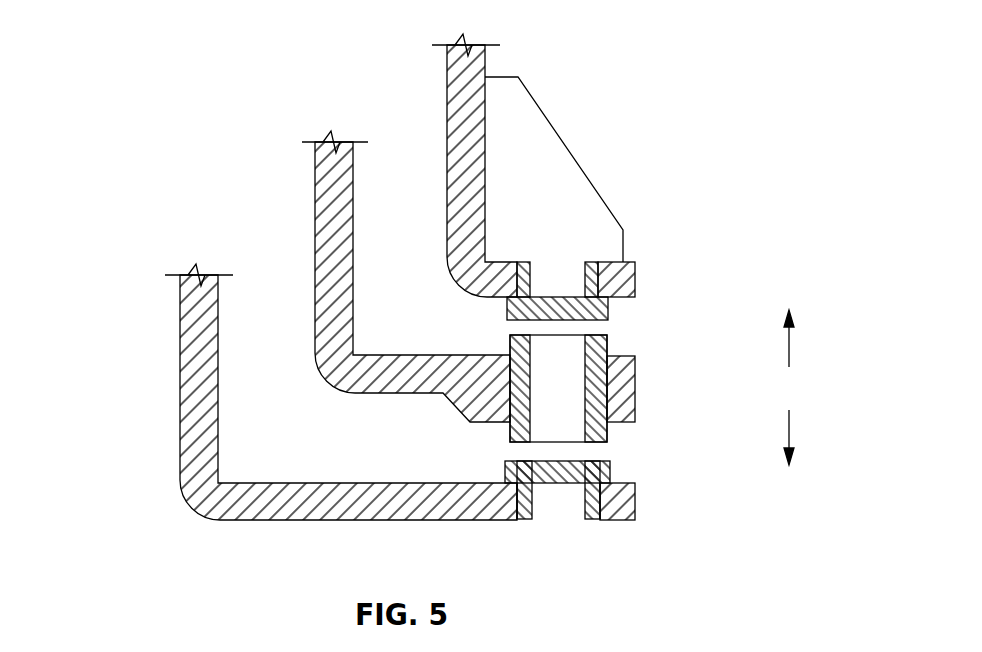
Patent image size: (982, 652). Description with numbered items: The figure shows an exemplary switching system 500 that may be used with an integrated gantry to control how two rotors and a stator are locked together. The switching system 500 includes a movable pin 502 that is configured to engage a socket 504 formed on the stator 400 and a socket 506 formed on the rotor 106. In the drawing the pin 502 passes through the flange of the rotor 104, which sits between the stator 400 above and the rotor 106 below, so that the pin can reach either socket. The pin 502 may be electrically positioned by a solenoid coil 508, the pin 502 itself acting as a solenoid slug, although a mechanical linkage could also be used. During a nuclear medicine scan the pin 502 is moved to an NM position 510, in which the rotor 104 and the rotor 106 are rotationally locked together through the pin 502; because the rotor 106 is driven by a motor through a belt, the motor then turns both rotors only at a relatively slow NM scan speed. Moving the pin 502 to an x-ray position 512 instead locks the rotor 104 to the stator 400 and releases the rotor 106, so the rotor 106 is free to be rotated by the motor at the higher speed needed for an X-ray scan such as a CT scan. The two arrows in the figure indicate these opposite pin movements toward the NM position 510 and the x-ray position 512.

The switching system 500 is at (130, 50).
The stator 400 is at (447, 102).
The rotor 104 is at (315, 190).
The rotor 106 is at (180, 322).
The socket 504 is at (587, 262).
The solenoid coil 508 is at (607, 341).
The movable pin 502 is at (585, 447).
The socket 506 is at (518, 507).
The NM position 510 is at (789, 433).
The x-ray position 512 is at (789, 343).